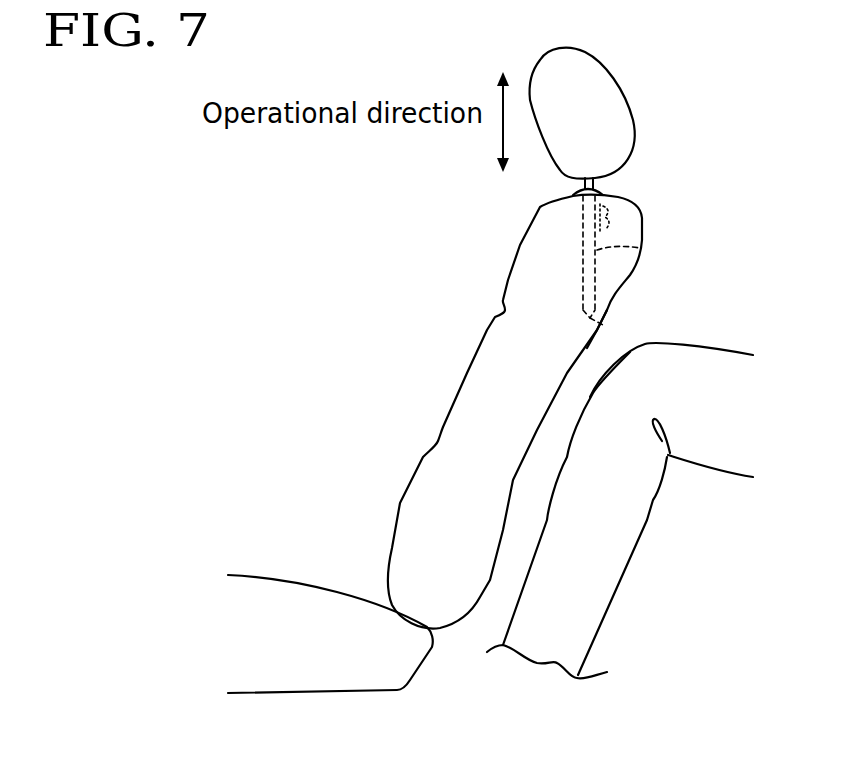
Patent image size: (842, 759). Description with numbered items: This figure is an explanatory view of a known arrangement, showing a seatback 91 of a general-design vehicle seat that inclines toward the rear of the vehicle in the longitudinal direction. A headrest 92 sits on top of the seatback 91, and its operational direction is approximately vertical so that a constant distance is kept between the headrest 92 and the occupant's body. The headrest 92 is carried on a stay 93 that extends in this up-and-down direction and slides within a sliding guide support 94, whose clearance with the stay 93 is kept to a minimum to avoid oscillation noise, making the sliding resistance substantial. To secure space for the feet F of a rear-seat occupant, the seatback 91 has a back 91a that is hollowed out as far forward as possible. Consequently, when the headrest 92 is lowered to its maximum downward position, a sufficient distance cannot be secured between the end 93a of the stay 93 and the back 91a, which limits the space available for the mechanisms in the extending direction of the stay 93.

The seatback 91 is at (473, 380).
The back 91a is at (602, 323).
The headrest 92 is at (623, 111).
The stay 93 is at (640, 248).
The end of the stay 93a is at (603, 325).
The sliding guide support 94 is at (604, 195).
The feet F is at (640, 541).